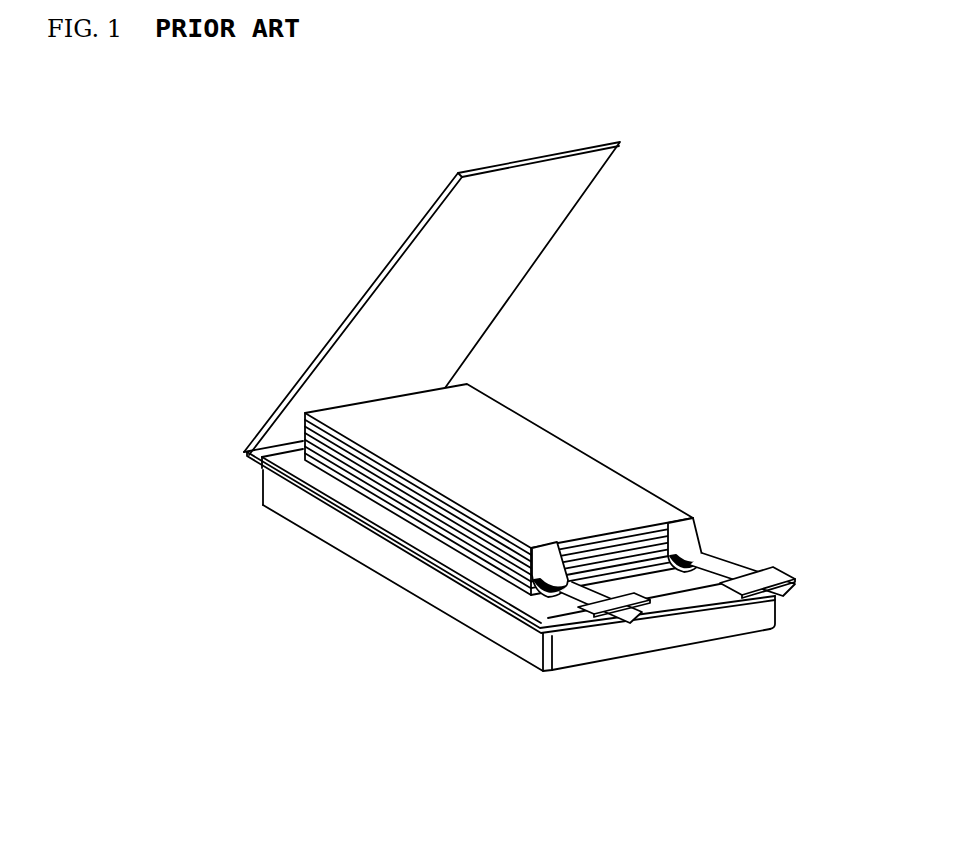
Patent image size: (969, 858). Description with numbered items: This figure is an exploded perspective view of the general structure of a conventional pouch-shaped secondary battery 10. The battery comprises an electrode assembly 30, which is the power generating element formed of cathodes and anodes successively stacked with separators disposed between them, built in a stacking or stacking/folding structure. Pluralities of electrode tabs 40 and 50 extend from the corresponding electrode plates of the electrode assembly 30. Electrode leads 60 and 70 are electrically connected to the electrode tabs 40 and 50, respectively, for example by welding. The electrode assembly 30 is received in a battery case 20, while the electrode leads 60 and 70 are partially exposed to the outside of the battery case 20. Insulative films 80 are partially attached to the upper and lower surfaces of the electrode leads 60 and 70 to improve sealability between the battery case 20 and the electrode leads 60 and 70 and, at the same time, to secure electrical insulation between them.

The pouch-shaped secondary battery 10 is at (255, 230).
The battery case 20 is at (243, 452).
The electrode assembly 30 is at (575, 410).
The electrode tab 40 is at (467, 594).
The electrode tab 50 is at (705, 538).
The electrode lead 60 is at (515, 633).
The electrode lead 70 is at (765, 569).
The insulative film 80 is at (603, 671).